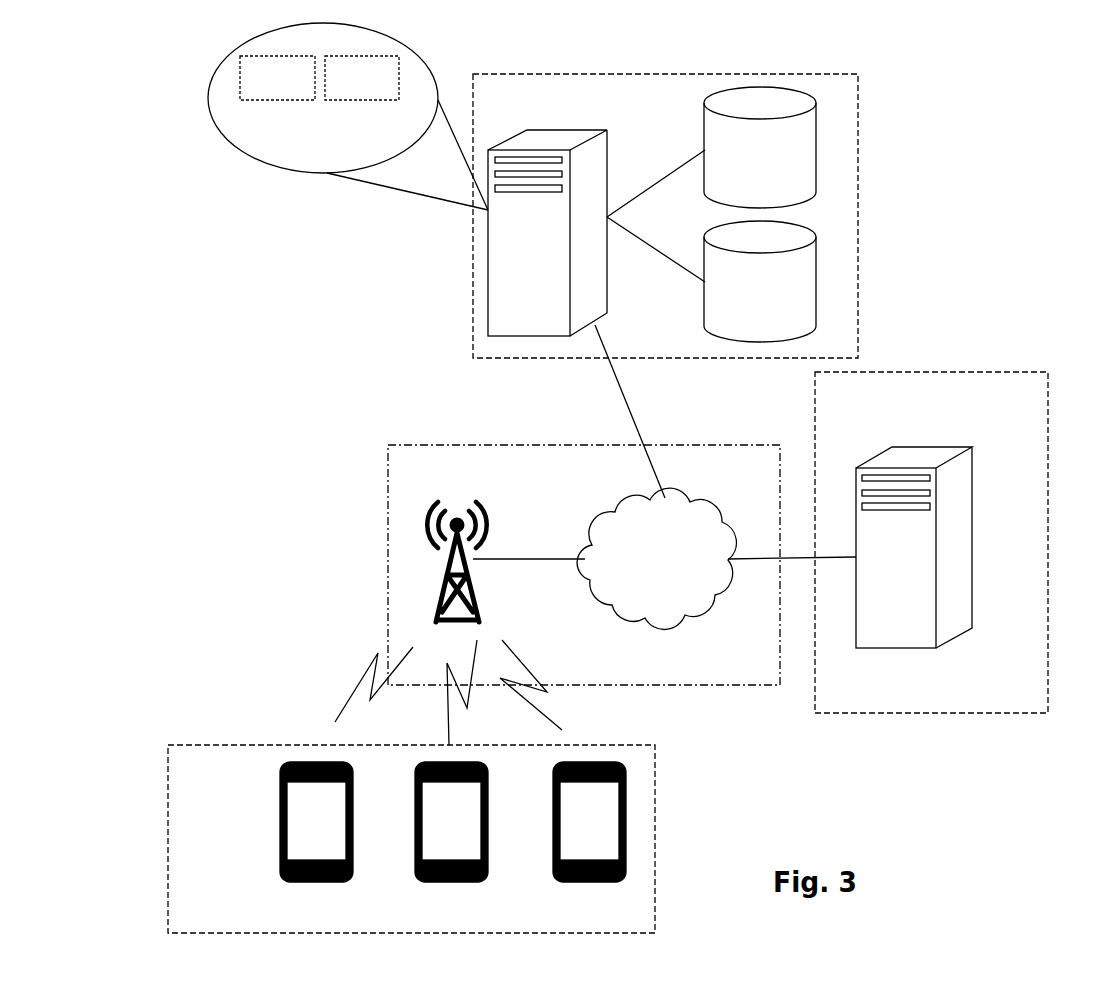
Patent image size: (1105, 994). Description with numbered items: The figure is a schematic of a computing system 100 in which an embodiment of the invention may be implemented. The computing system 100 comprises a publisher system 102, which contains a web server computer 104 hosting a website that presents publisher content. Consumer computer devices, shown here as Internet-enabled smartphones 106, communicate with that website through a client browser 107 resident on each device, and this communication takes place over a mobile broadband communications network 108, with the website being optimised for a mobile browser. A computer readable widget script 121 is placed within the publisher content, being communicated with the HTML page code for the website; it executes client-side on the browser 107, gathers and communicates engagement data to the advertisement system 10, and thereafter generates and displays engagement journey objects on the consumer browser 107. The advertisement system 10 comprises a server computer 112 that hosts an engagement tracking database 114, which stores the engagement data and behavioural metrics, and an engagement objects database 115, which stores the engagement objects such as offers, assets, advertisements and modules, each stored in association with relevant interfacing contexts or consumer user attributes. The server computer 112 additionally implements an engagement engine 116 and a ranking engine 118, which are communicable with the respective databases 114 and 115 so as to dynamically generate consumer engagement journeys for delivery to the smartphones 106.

The advertisement system 10 is at (623, 74).
The computing system 100 is at (1028, 148).
The publisher system 102 is at (935, 370).
The web server computer 104 is at (962, 447).
The Internet-enabled smartphone 106 is at (268, 822).
The client browser 107 is at (303, 822).
The mobile broadband communications network 108 is at (437, 443).
The server computer 112 is at (488, 257).
The engagement tracking database 114 is at (817, 148).
The engagement objects database 115 is at (817, 282).
The engagement engine 116 is at (277, 78).
The ranking engine 118 is at (362, 78).
The widget script 121 is at (303, 800).